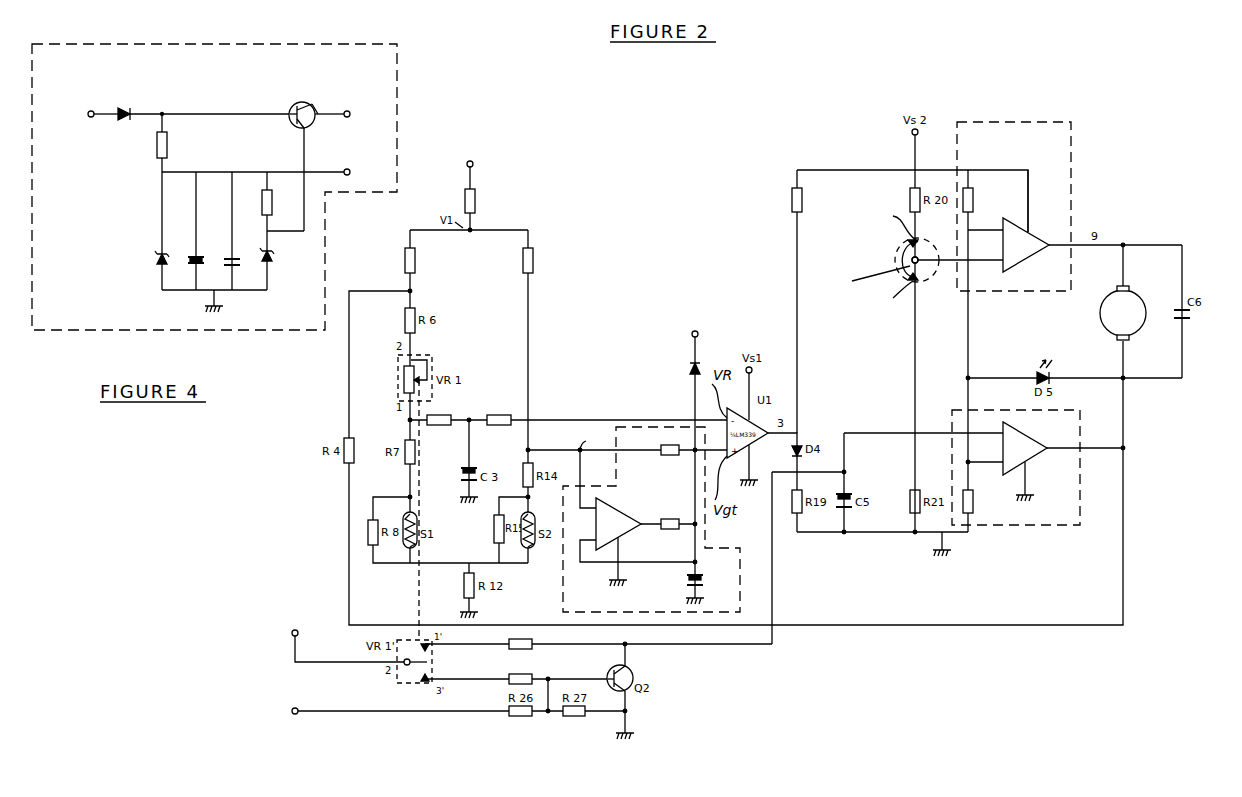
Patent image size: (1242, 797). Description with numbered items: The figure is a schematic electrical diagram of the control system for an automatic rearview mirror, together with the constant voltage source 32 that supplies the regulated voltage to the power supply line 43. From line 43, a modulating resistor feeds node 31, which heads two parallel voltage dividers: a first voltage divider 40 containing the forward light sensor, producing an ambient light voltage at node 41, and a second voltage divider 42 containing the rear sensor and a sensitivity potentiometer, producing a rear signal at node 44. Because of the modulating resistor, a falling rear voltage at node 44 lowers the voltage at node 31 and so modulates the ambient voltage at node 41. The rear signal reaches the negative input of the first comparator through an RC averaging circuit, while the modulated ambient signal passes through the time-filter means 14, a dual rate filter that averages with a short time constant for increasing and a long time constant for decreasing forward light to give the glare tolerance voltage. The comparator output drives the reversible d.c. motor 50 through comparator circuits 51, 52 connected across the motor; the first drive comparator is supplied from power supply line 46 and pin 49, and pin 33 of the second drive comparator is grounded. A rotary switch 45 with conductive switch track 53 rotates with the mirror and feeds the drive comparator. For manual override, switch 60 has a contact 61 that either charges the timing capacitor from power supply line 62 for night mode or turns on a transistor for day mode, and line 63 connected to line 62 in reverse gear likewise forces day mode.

In FIG. 4, the constant voltage source 32 is at (198, 73).
In FIG. 2, the second voltage divider 42 is at (410, 240).
In FIG. 2, the power supply line 43 is at (473, 164).
In FIG. 2, the node 31 is at (471, 230).
In FIG. 2, the first voltage divider 40 is at (528, 250).
In FIG. 2, the node 44 is at (410, 420).
In FIG. 2, the node 41 is at (528, 450).
In FIG. 2, the time-filter means 14 is at (726, 605).
In FIG. 2, the power supply line 46 is at (838, 172).
In FIG. 2, the rotary switch 45 is at (893, 258).
In FIG. 2, the electrically conductive switch track 53 is at (928, 276).
In FIG. 2, the comparator circuit 51 is at (1055, 143).
In FIG. 2, the pin of comparator circuit U2 49 is at (1028, 206).
In FIG. 2, the reversible d.c. motor 50 is at (1116, 323).
In FIG. 2, the pin of comparator circuit U3 33 is at (1045, 490).
In FIG. 2, the comparator circuit 52 is at (1060, 515).
In FIG. 2, the power supply line 62 is at (295, 650).
In FIG. 2, the line 63 is at (313, 712).
In FIG. 2, the switch 60 is at (400, 684).
In FIG. 2, the contact of switch 60 61 is at (420, 684).